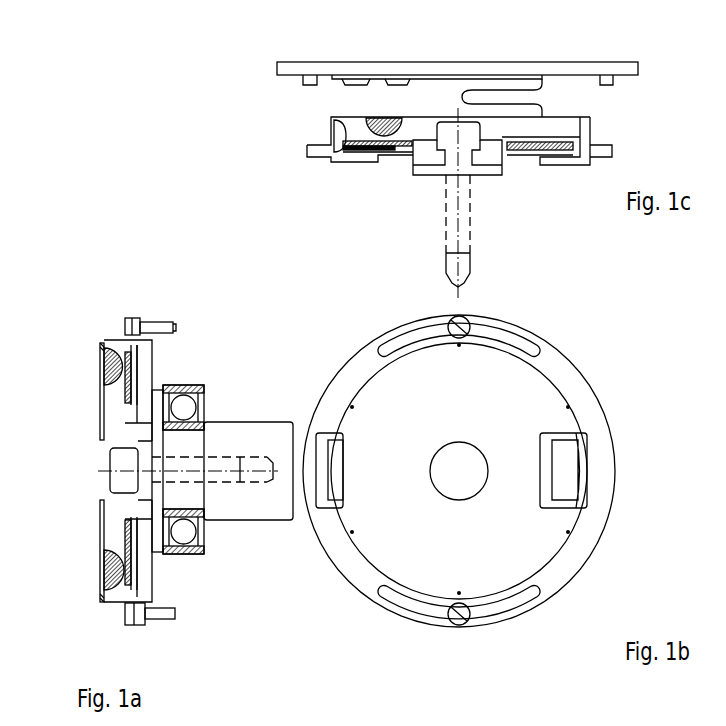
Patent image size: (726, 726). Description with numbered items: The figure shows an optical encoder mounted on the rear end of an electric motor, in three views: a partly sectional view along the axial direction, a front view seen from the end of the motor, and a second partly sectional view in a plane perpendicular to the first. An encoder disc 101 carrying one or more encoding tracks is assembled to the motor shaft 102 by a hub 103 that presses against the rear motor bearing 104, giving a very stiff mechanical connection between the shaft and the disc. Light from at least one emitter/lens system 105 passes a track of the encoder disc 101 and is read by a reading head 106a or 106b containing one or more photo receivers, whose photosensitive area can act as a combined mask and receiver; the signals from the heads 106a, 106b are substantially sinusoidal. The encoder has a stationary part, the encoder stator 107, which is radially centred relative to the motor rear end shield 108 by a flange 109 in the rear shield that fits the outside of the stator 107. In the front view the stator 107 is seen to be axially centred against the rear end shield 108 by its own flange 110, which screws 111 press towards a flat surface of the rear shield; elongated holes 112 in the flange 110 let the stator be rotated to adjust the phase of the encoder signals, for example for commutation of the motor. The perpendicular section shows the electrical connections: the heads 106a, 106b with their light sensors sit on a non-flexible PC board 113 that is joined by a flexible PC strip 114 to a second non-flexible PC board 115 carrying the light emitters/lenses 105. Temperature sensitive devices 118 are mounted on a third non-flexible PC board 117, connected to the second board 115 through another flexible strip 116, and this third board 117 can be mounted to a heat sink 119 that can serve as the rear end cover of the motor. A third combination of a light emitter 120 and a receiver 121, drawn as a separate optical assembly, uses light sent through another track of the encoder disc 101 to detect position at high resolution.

In FIG. 1a, the encoder disc 101 is at (127, 408).
In FIG. 1a, the motor shaft 102 is at (202, 497).
In FIG. 1a, the hub 103 is at (262, 428).
In FIG. 1a, the rear motor bearing 104 is at (187, 412).
In FIG. 1a, the emitter/lens system 105 is at (103, 368).
In FIG. 1a, the reading head 106a is at (116, 342).
In FIG. 1a, the reading head 106b is at (115, 545).
In FIG. 1a, the encoder stator 107 is at (380, 650).
In FIG. 1a, the motor rear end shield 108 is at (157, 392).
In FIG. 1a, the flange 109 is at (157, 590).
In FIG. 1b, the flange 110 is at (348, 377).
In FIG. 1b, the screws 111 is at (460, 625).
In FIG. 1b, the elongated holes 112 is at (397, 595).
In FIG. 1c, the non-flexible PC board 113 is at (405, 165).
In FIG. 1c, the flexible PC strip 114 is at (358, 366).
In FIG. 1c, the second non-flexible PC board 115 is at (333, 113).
In FIG. 1c, the flexible strip 116 is at (557, 433).
In FIG. 1c, the third non-flexible PC board 117 is at (412, 75).
In FIG. 1c, the temperature sensitive devices 118 is at (348, 75).
In FIG. 1c, the heat sink 119 is at (290, 72).
In FIG. 1c, the light emitter 120 is at (382, 116).
In FIG. 1c, the receiver 121 is at (378, 160).